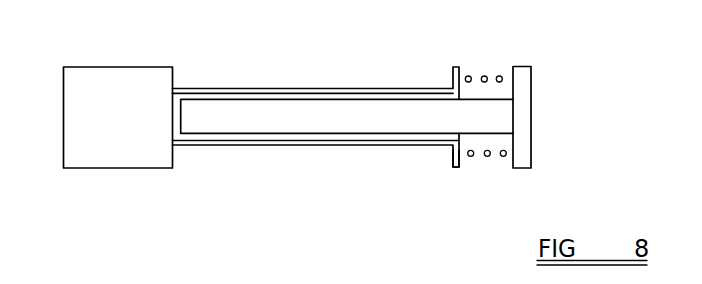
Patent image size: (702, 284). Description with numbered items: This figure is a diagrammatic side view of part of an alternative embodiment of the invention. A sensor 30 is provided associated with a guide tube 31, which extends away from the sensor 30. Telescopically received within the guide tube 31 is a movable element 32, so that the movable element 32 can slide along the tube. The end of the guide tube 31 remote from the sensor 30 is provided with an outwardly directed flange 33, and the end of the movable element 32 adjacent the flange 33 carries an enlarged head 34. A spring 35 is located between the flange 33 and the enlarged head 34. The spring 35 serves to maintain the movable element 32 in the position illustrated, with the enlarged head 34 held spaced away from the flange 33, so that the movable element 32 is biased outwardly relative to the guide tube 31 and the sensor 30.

The sensor 30 is at (149, 73).
The guide tube 31 is at (324, 89).
The movable element 32 is at (412, 115).
The outwardly directed flange 33 is at (454, 165).
The enlarged head 34 is at (527, 88).
The spring 35 is at (486, 76).